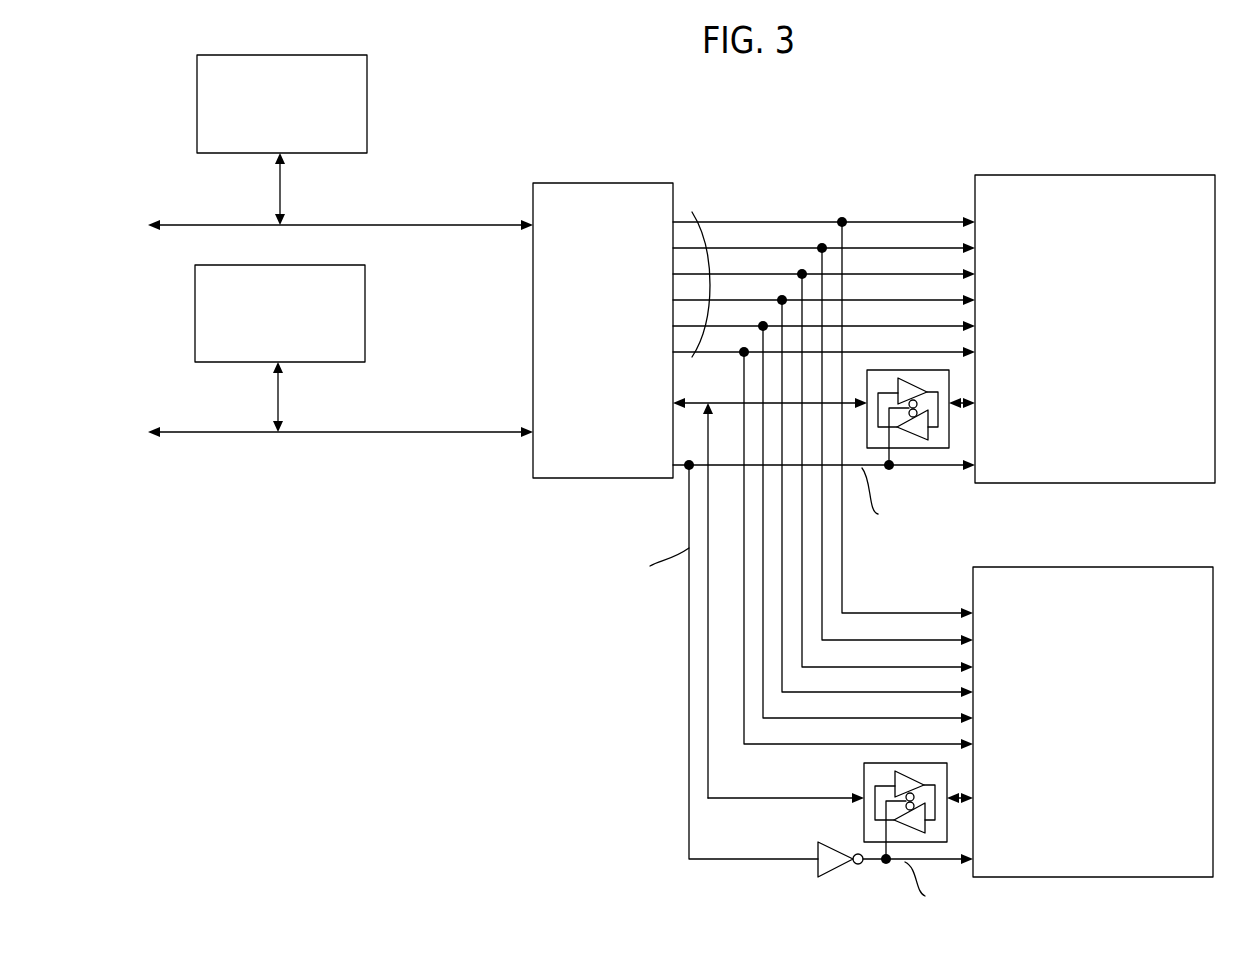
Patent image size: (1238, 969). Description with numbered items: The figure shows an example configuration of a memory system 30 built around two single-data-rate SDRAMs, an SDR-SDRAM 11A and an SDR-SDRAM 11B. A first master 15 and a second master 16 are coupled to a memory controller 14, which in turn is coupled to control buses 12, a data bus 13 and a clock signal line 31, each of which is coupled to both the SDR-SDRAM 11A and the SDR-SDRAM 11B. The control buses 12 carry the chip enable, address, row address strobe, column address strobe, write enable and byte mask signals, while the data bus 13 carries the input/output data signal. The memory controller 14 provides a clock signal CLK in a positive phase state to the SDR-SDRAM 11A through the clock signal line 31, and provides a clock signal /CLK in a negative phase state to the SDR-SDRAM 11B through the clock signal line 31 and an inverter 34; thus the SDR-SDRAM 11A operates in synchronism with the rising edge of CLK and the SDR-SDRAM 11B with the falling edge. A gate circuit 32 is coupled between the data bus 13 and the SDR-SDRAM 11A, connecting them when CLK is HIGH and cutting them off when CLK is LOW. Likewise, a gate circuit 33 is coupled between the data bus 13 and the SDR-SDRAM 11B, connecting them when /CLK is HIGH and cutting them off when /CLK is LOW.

The memory system 30 is at (763, 142).
The first master 15 is at (367, 116).
The second master 16 is at (367, 326).
The memory controller 14 is at (612, 183).
The control buses 12 is at (692, 212).
The data bus 13 is at (694, 403).
The SDR-SDRAM 11A is at (1150, 175).
The SDR-SDRAM 11B is at (1148, 567).
The clock signal line 31 is at (678, 467).
The gate circuit 32 is at (912, 450).
The gate circuit 33 is at (864, 780).
The inverter 34 is at (843, 870).